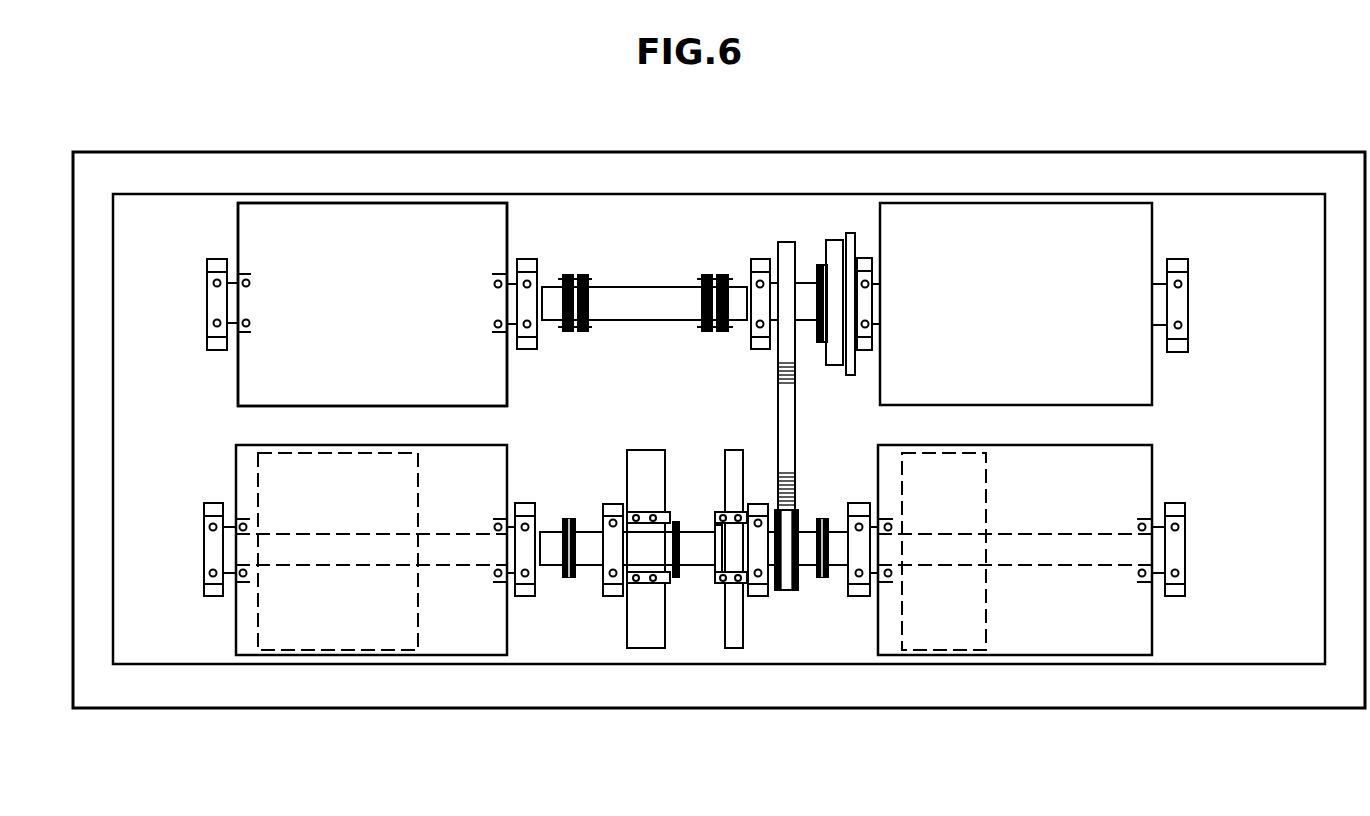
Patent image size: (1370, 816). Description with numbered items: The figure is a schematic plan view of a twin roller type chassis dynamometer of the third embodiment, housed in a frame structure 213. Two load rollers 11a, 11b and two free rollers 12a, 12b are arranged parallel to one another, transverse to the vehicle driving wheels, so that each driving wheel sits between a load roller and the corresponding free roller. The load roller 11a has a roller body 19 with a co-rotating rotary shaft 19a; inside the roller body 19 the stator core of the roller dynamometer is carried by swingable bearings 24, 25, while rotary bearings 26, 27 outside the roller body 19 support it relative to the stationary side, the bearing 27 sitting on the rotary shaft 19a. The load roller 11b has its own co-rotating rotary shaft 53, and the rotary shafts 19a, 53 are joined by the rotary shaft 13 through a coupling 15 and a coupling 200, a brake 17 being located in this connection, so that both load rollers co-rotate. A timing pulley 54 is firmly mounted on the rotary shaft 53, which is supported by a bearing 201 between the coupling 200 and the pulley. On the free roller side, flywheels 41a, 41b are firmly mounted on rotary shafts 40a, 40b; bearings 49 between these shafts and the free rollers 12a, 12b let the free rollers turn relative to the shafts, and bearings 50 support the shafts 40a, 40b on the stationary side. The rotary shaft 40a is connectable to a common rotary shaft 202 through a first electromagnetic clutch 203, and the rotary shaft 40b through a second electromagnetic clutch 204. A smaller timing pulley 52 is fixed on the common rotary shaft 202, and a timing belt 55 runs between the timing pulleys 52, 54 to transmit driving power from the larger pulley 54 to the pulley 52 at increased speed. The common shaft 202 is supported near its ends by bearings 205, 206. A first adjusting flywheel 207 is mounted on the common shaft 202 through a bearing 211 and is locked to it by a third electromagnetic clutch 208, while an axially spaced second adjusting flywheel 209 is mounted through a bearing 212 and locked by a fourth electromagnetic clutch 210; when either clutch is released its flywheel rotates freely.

The load roller 11a is at (339, 182).
The load roller 11b is at (1035, 215).
The free roller 12a is at (430, 647).
The free roller 12b is at (1035, 657).
The rotary shaft 13 is at (644, 302).
The coupling 15 is at (578, 276).
The brake 17 is at (854, 237).
The roller body 19 is at (393, 215).
The rotary shaft 19a is at (548, 287).
The swingable bearing 24 is at (244, 272).
The swingable bearing 25 is at (496, 273).
The rotary bearing 26 is at (214, 258).
The rotary bearing 27 is at (527, 258).
The rotary shaft 40a is at (465, 562).
The rotary shaft 40b is at (1072, 562).
The flywheel 41a is at (314, 632).
The flywheel 41b is at (958, 647).
The bearing 49 is at (243, 581).
The bearing 50 is at (212, 597).
The timing pulley 52 is at (782, 575).
The rotary shaft 53 is at (801, 281).
The timing pulley 54 is at (794, 243).
The timing belt 55 is at (777, 403).
The coupling 200 is at (716, 276).
The bearing 201 is at (760, 258).
The common rotary shaft 202 is at (697, 535).
The first electromagnetic clutch 203 is at (566, 581).
The second electromagnetic clutch 204 is at (823, 578).
The bearing 205 is at (612, 597).
The bearing 206 is at (808, 567).
The first adjusting flywheel 207 is at (640, 649).
The third electromagnetic clutch 208 is at (680, 580).
The second adjusting flywheel 209 is at (735, 649).
The fourth electromagnetic clutch 210 is at (721, 525).
The bearing 211 is at (658, 519).
The bearing 212 is at (760, 597).
The frame structure 213 is at (1200, 175).